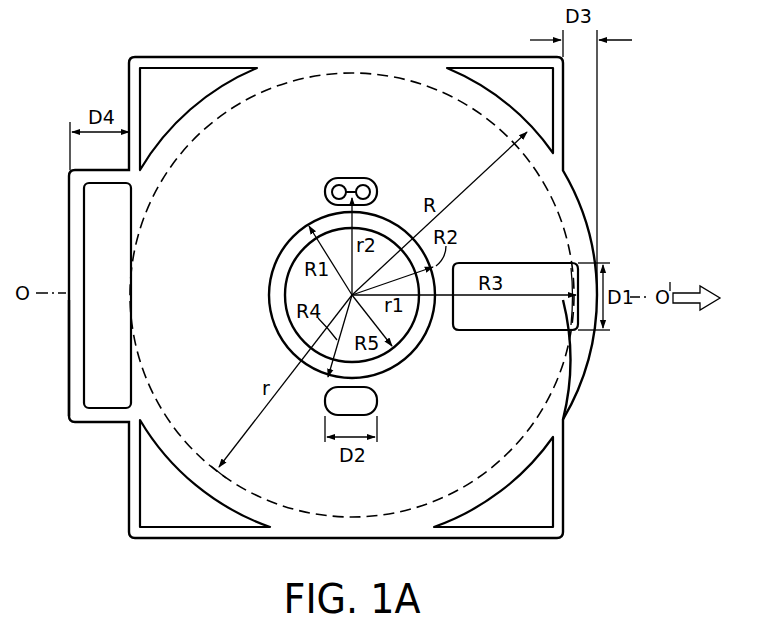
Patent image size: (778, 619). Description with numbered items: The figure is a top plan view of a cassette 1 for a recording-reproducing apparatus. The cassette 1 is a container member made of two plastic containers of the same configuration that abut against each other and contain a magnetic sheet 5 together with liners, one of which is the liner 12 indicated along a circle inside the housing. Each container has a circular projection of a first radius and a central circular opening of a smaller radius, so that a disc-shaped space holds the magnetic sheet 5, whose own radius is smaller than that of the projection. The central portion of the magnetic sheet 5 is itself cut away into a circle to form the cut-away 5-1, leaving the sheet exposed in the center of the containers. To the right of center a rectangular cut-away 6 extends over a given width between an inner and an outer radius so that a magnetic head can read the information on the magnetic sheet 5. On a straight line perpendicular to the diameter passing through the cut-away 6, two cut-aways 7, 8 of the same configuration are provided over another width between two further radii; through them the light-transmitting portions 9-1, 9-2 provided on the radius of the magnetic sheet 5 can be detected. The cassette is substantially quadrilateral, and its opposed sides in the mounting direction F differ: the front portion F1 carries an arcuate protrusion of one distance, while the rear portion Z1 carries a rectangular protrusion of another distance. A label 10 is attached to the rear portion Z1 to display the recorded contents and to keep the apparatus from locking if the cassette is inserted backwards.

The cassette 1 is at (582, 178).
The magnetic sheet 5 is at (268, 305).
The cut-away 5-1 is at (288, 277).
The rectangular cut-away 6 is at (541, 263).
The cut-away 7 is at (352, 178).
The cut-away 8 is at (380, 395).
The light-transmitting portion 9-1 is at (331, 187).
The light-transmitting portion 9-2 is at (371, 187).
The label 10 is at (105, 402).
The liner 12 is at (388, 513).
The front portion F1 is at (574, 388).
The rear portion Z1 is at (73, 356).
The mounting direction F is at (703, 298).